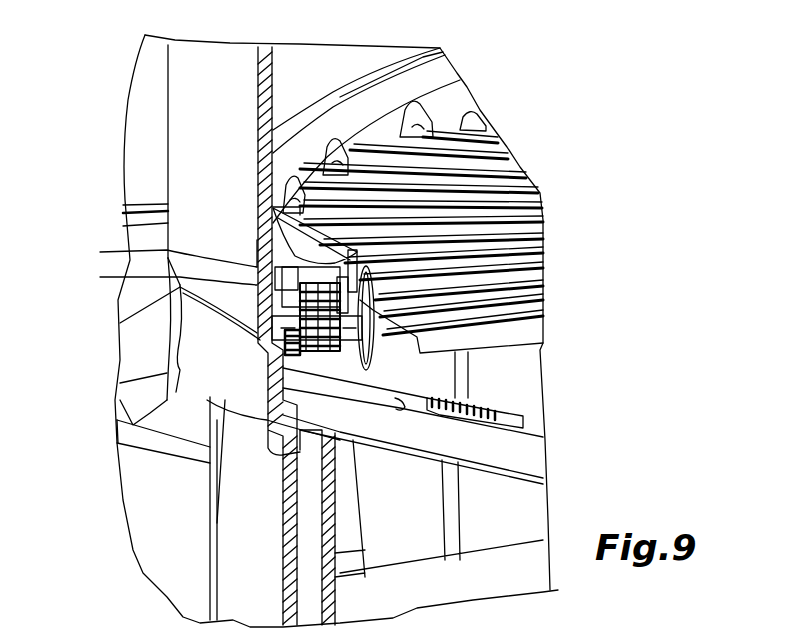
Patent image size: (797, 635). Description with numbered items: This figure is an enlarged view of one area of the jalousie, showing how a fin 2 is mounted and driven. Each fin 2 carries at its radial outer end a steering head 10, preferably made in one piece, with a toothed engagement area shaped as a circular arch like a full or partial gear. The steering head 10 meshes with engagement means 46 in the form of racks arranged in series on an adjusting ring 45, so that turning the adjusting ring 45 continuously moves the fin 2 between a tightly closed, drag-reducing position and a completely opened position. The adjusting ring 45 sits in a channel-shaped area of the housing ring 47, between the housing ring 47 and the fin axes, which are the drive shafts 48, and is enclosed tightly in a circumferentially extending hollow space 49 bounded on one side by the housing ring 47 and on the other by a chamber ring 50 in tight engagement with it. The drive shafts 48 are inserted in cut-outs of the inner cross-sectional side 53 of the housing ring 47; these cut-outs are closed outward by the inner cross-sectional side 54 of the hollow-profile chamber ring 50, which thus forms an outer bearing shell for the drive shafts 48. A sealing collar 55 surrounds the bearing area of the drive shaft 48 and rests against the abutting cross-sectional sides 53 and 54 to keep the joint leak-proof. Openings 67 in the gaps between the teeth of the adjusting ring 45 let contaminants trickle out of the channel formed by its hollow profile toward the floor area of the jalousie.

The fin 2 is at (503, 183).
The steering head 10 is at (180, 287).
The adjusting ring 45 is at (394, 426).
The engagement means 46 is at (483, 403).
The housing ring 47 is at (258, 375).
The drive shaft 48 is at (257, 335).
The hollow space 49 is at (257, 240).
The chamber ring 50 is at (292, 268).
The inner cross-sectional side of the housing ring 53 is at (360, 340).
The inner cross-sectional side of the chamber ring 54 is at (358, 272).
The sealing collar 55 is at (505, 277).
The opening 67 is at (400, 407).